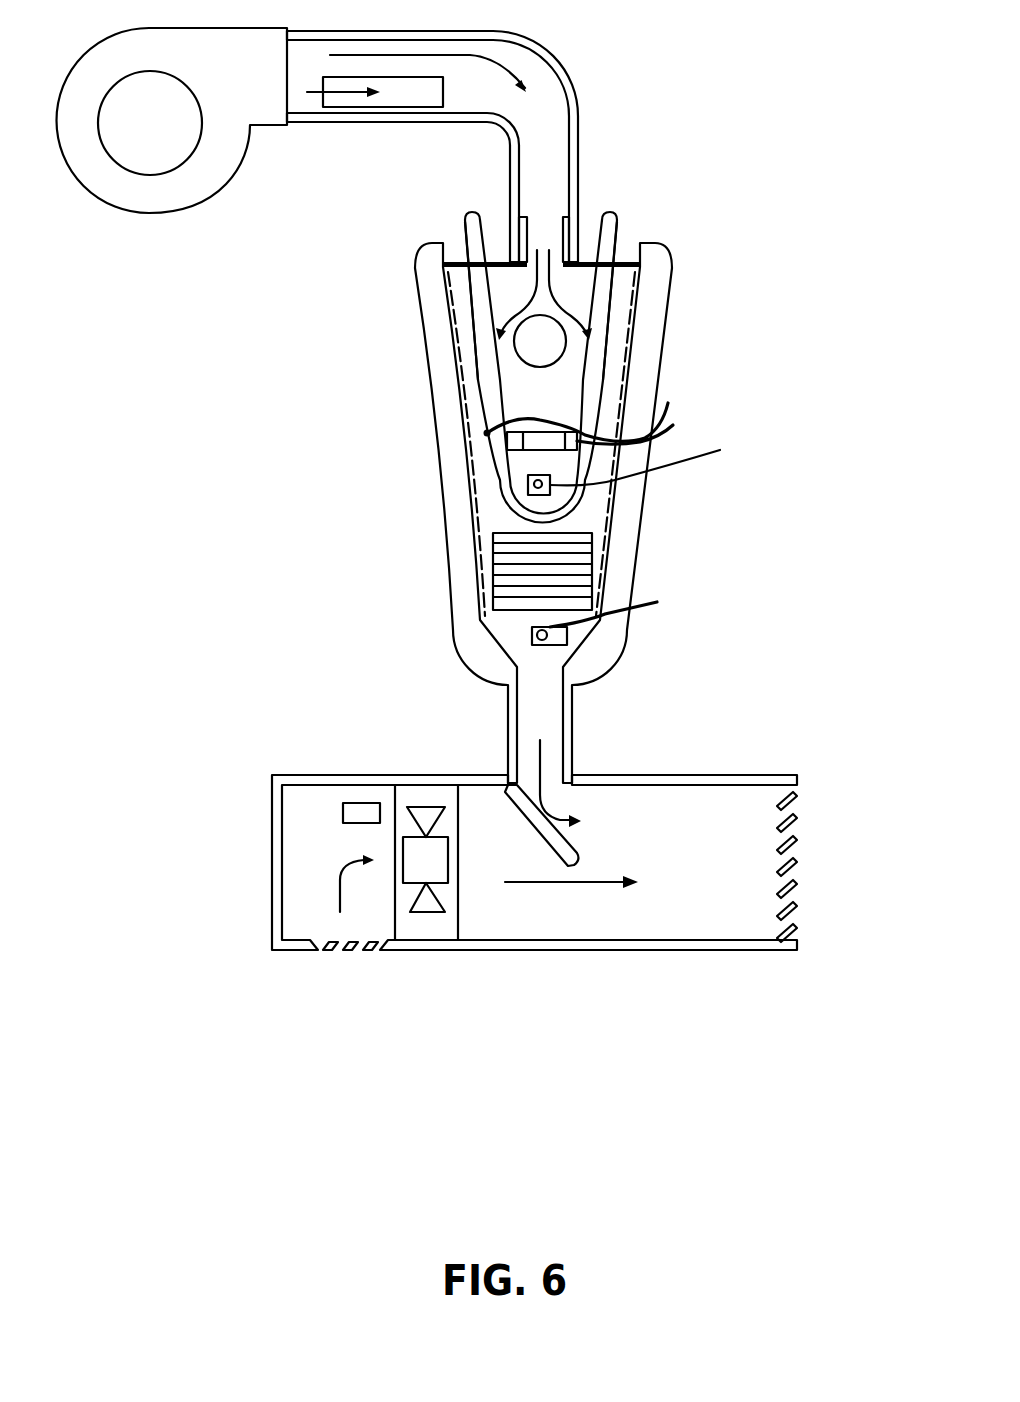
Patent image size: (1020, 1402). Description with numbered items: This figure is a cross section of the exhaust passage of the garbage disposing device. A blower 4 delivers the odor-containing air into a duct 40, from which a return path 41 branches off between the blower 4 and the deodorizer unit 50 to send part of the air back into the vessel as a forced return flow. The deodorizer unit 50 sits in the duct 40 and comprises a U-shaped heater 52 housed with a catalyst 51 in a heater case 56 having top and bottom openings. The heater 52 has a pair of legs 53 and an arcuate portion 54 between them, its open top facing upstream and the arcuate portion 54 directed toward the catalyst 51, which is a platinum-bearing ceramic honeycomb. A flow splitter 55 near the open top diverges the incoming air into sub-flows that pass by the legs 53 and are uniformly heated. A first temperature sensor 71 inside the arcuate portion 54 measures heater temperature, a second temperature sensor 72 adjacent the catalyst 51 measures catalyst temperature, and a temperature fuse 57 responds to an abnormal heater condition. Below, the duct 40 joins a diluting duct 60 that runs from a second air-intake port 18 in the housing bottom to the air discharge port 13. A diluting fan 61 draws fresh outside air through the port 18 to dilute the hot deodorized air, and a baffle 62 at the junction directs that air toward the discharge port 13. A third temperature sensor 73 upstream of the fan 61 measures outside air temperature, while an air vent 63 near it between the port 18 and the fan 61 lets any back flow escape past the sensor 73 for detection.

The blower 4 is at (158, 143).
The duct 40 is at (575, 90).
The return path 41 is at (405, 95).
The deodorizer unit 50 is at (440, 398).
The catalyst 51 is at (567, 563).
The U-shaped heater 52 is at (473, 230).
The legs 53 is at (483, 372).
The arcuate portion 54 is at (603, 518).
The flow splitter 55 is at (545, 333).
The heater case 56 is at (637, 375).
The temperature fuse 57 is at (548, 443).
The first temperature sensor 71 is at (528, 495).
The second temperature sensor 72 is at (553, 637).
The diluting duct 60 is at (555, 900).
The diluting fan 61 is at (420, 912).
The baffle 62 is at (573, 847).
The air vent 63 is at (288, 778).
The third temperature sensor 73 is at (353, 815).
The air discharge port 13 is at (797, 858).
The second air-intake port 18 is at (345, 950).